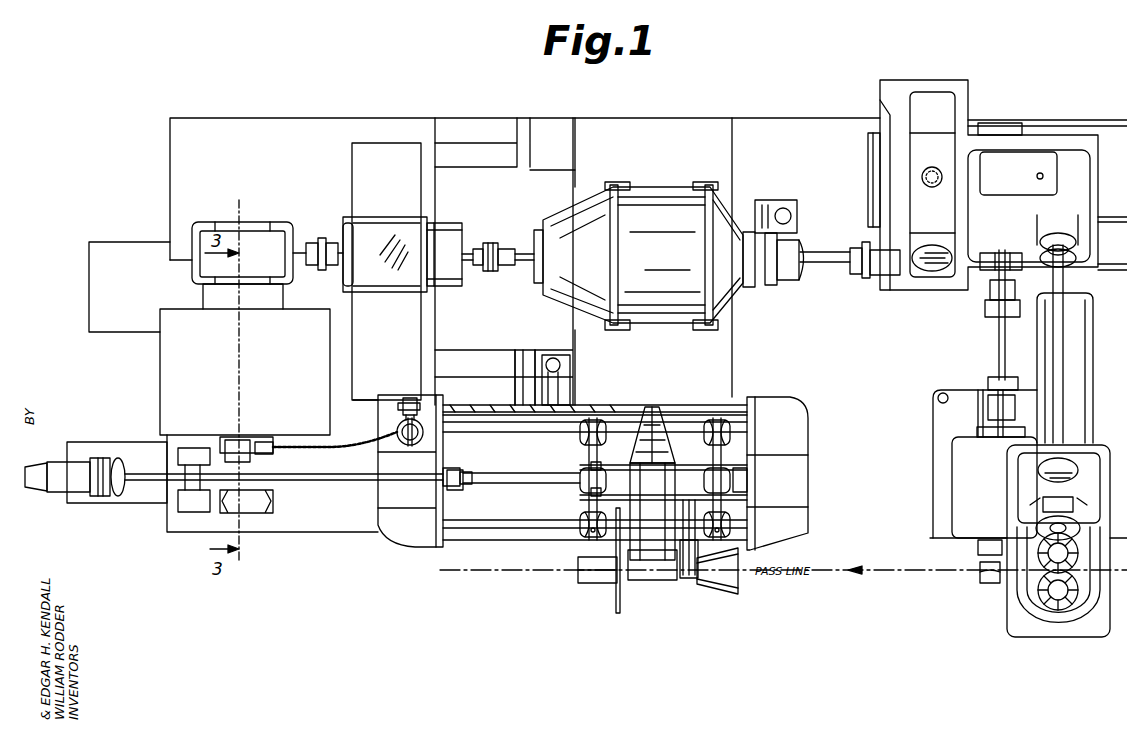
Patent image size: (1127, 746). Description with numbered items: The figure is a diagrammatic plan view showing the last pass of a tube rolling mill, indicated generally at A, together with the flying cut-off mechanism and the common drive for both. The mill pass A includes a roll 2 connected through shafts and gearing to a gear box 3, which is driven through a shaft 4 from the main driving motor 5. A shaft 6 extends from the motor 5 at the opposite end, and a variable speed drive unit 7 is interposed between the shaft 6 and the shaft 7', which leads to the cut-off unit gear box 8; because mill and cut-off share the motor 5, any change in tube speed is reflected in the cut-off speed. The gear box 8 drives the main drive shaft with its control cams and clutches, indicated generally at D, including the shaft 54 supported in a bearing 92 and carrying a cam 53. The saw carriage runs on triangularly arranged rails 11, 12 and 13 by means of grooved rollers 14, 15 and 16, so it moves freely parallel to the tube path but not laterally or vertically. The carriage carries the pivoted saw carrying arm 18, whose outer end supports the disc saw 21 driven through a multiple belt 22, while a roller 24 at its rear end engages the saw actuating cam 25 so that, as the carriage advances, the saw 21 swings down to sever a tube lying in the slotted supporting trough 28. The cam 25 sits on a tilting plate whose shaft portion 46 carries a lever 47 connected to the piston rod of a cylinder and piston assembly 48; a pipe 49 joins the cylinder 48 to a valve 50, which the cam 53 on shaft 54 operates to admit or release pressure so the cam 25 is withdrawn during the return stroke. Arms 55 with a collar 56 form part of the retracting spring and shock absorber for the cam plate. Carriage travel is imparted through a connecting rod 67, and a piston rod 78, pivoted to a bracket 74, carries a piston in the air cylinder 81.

The roll 2 is at (983, 582).
The gear box 3 is at (918, 215).
The shaft 4 is at (828, 264).
The main driving motor 5 is at (657, 213).
The shaft 6 is at (528, 262).
The variable speed drive unit 7 is at (386, 221).
The shaft 7' is at (311, 228).
The cut-off unit gear box 8 is at (254, 240).
The rail 11 is at (458, 470).
The rail 12 is at (490, 536).
The rail 13 is at (518, 426).
The roller 14 is at (575, 482).
The roller 15 is at (584, 516).
The roller 16 is at (584, 440).
The saw carrying arm 18 is at (690, 455).
The disc saw 21 is at (614, 592).
The multiple belt 22 is at (692, 580).
The roller 24 is at (660, 450).
The saw actuating cam 25 is at (620, 408).
The supporting trough 28 is at (577, 590).
The shaft portion 46 is at (430, 398).
The lever 47 is at (402, 421).
The cylinder and piston assembly 48 is at (400, 438).
The pipe 49 is at (310, 441).
The valve 50 is at (275, 445).
The cam 53 is at (245, 440).
The shaft 54 is at (226, 440).
The arm 55 is at (540, 396).
The collar 56 is at (565, 391).
The connecting rod 67 is at (318, 483).
The bracket 74 is at (186, 497).
The piston rod 78 is at (155, 486).
The cylinder 81 is at (76, 490).
The bearing 92 is at (250, 512).
The last pass of tube mill A is at (970, 405).
The main drive shaft with control cams and clutches D is at (197, 385).